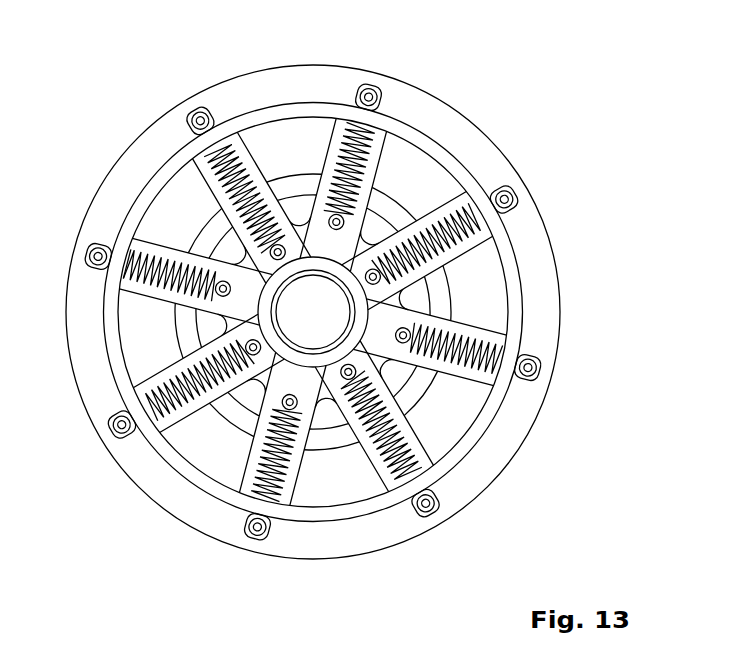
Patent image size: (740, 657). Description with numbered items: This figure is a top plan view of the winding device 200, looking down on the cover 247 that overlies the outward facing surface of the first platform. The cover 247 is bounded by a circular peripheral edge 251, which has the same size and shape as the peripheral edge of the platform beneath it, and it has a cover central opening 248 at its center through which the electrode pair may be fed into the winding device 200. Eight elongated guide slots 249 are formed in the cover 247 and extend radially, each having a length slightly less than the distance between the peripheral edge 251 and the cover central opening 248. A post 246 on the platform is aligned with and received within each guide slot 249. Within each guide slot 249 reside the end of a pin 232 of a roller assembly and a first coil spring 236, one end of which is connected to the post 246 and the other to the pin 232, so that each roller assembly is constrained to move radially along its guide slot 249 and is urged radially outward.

The winding device 200 is at (146, 85).
The pin 232 is at (200, 250).
The first coil spring 236 is at (125, 287).
The post 246 is at (200, 110).
The cover 247 is at (542, 292).
The cover central opening 248 is at (258, 317).
The guide slots 249 is at (330, 170).
The peripheral edge 251 is at (130, 148).